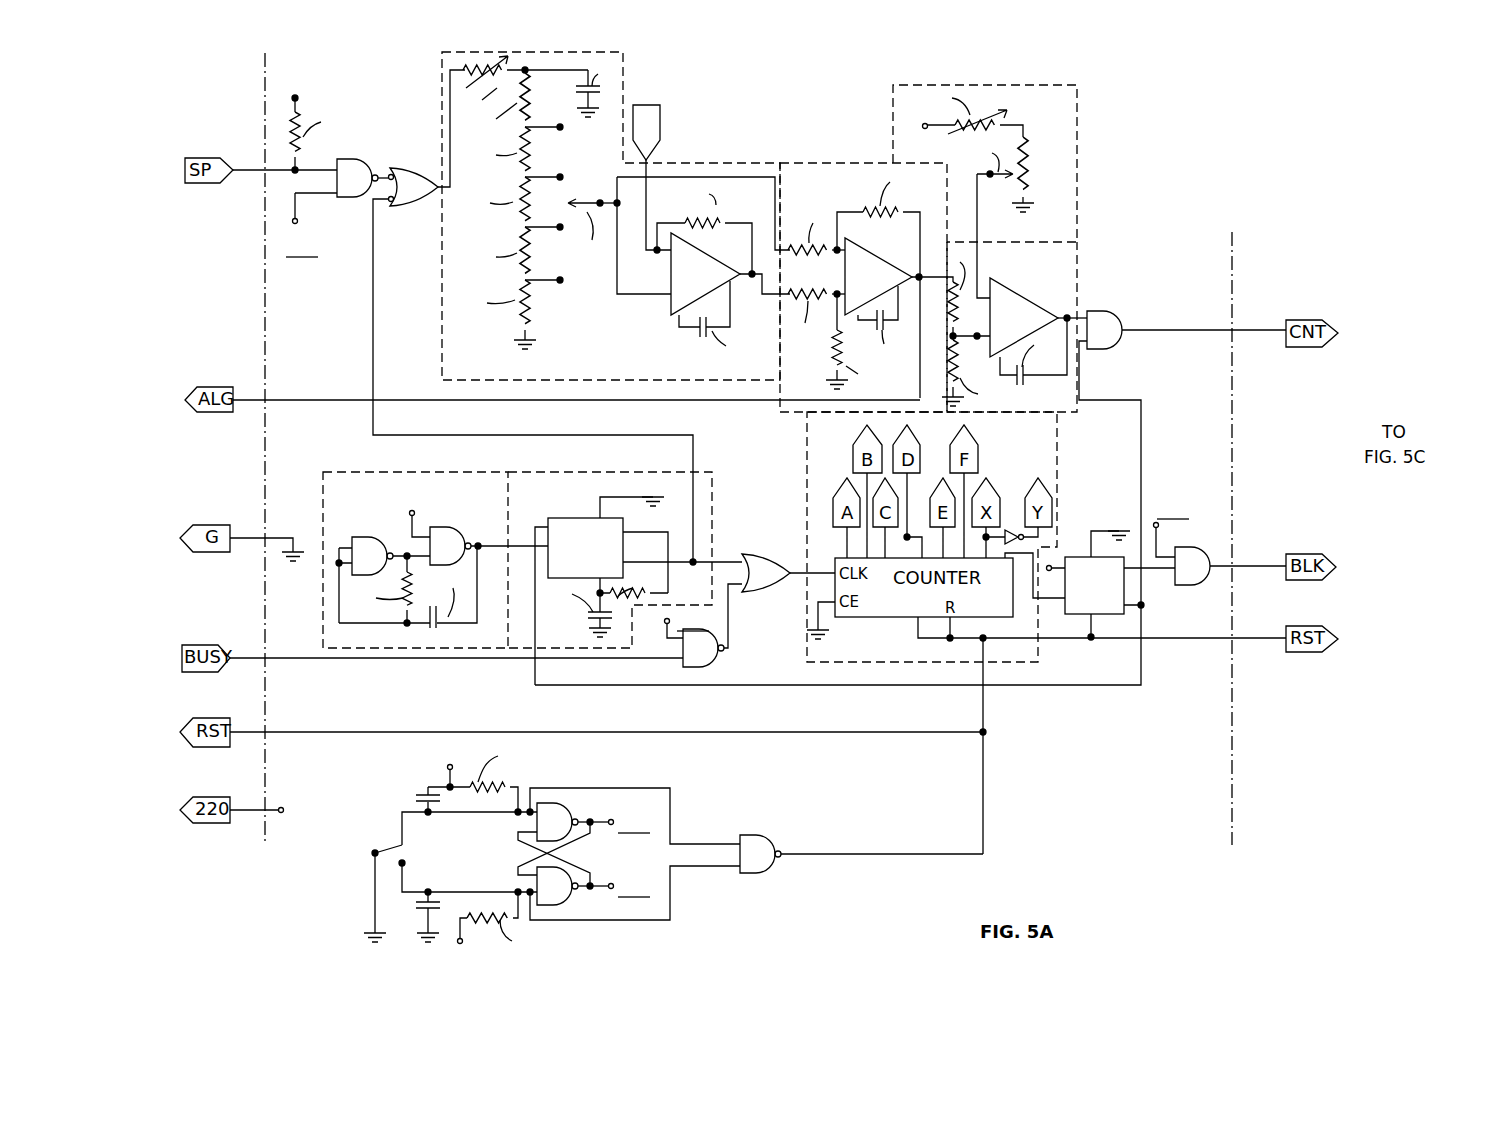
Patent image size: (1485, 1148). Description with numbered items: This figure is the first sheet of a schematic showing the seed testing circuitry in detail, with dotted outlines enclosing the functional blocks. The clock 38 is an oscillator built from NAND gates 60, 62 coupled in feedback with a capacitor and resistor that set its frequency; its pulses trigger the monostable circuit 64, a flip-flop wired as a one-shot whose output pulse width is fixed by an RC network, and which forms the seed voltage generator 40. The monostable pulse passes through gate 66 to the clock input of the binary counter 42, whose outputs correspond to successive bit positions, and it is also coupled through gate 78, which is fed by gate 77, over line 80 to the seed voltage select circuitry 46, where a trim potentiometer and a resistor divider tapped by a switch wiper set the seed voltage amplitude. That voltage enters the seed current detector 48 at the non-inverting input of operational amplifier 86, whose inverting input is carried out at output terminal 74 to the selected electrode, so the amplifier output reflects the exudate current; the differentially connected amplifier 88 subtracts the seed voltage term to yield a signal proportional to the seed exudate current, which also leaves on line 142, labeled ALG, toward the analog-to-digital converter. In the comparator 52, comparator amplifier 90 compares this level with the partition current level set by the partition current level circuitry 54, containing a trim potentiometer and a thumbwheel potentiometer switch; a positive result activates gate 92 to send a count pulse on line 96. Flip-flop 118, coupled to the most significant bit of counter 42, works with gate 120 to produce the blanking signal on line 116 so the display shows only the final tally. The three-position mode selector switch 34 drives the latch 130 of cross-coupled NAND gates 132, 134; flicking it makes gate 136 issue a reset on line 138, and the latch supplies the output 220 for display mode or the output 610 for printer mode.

The mode selector switch 34 is at (390, 832).
The clock 38 is at (350, 487).
The seed voltage generator 40 is at (582, 490).
The counter 42 is at (1057, 441).
The seed voltage select circuitry 46 is at (620, 100).
The seed current detector 48 is at (725, 168).
The comparator 52 is at (1068, 280).
The partition current level circuitry 54 is at (1072, 178).
The NAND gate 60 is at (372, 550).
The NAND gate 62 is at (447, 550).
The monostable circuit 64 is at (580, 520).
The gate 66 is at (763, 570).
The output terminal 74 is at (651, 160).
The NAND gate 77 is at (356, 172).
The gate 78 is at (406, 184).
The line 80 is at (372, 290).
The operational amplifier 86 is at (703, 270).
The differentially connected amplifier 88 is at (873, 267).
The comparator amplifier 90 is at (1022, 298).
The gate 92 is at (1109, 312).
The line 96 is at (1256, 328).
The line 116 is at (1247, 562).
The flip-flop 118 is at (1077, 562).
The gate 120 is at (1184, 548).
The latch 130 is at (520, 855).
The NAND gate 132 is at (560, 823).
The NAND gate 134 is at (566, 898).
The gate 136 is at (755, 836).
The line 138 is at (848, 854).
The line 142 is at (398, 400).
The display-mode output 220 is at (710, 697).
The printer-mode output 610 is at (498, 534).